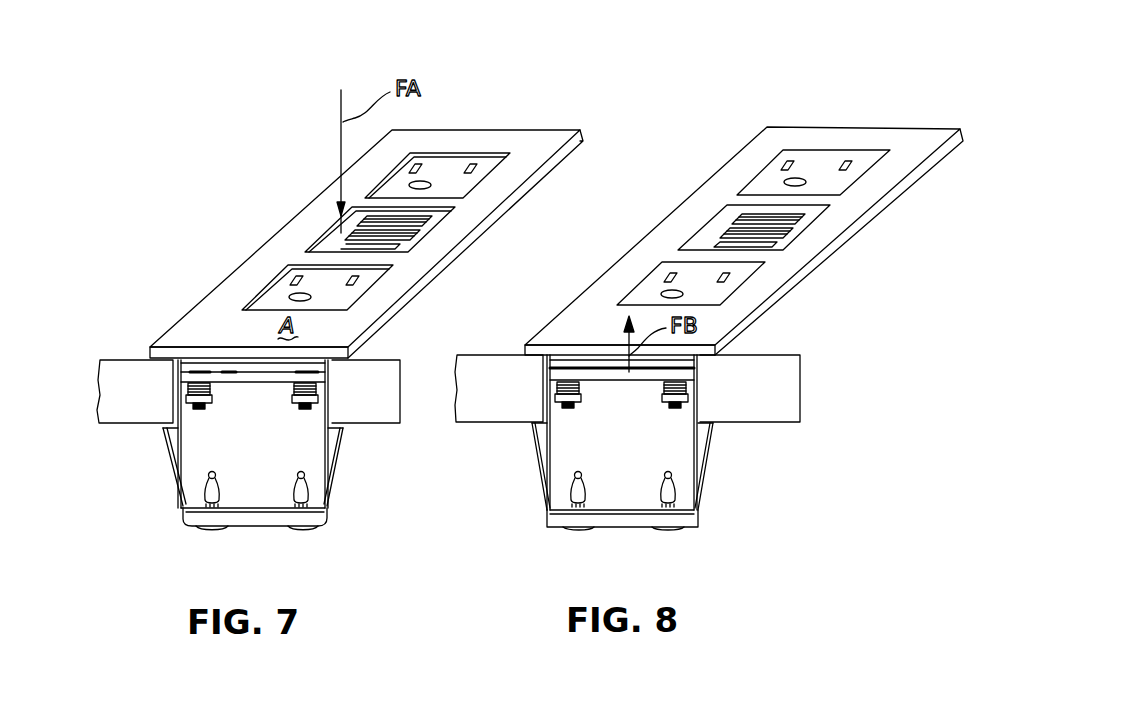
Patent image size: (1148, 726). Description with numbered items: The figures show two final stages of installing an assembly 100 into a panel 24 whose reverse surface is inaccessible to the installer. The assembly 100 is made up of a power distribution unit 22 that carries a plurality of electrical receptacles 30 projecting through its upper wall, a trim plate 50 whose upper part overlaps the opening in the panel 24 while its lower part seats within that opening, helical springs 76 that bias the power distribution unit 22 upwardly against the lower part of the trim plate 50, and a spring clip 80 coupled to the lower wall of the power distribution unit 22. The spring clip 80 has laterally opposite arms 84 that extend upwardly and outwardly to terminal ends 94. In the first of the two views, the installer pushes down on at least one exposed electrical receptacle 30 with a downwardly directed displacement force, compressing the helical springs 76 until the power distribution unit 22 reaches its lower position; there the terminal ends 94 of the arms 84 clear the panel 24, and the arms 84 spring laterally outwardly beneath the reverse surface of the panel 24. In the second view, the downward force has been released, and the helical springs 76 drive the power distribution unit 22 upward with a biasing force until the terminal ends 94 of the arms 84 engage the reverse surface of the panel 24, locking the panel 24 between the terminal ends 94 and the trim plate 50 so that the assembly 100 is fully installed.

In FIG. 7, the assembly 100 is at (245, 258).
In FIG. 8, the assembly 100 is at (643, 238).
In FIG. 7, the trim plate 50 is at (548, 136).
In FIG. 8, the trim plate 50 is at (915, 142).
In FIG. 7, the electrical receptacles 30 is at (438, 167).
In FIG. 8, the electrical receptacles 30 is at (812, 167).
In FIG. 7, the panel 24 is at (123, 367).
In FIG. 8, the panel 24 is at (775, 366).
In FIG. 7, the power distribution unit 22 is at (181, 525).
In FIG. 8, the power distribution unit 22 is at (702, 488).
In FIG. 7, the helical spring 76 is at (292, 392).
In FIG. 8, the helical spring 76 is at (584, 392).
In FIG. 7, the arms 84 is at (173, 460).
In FIG. 8, the arms 84 is at (537, 476).
In FIG. 7, the terminal ends 94 is at (163, 430).
In FIG. 8, the terminal ends 94 is at (531, 423).
In FIG. 7, the spring clip 80 is at (251, 527).
In FIG. 8, the spring clip 80 is at (634, 529).